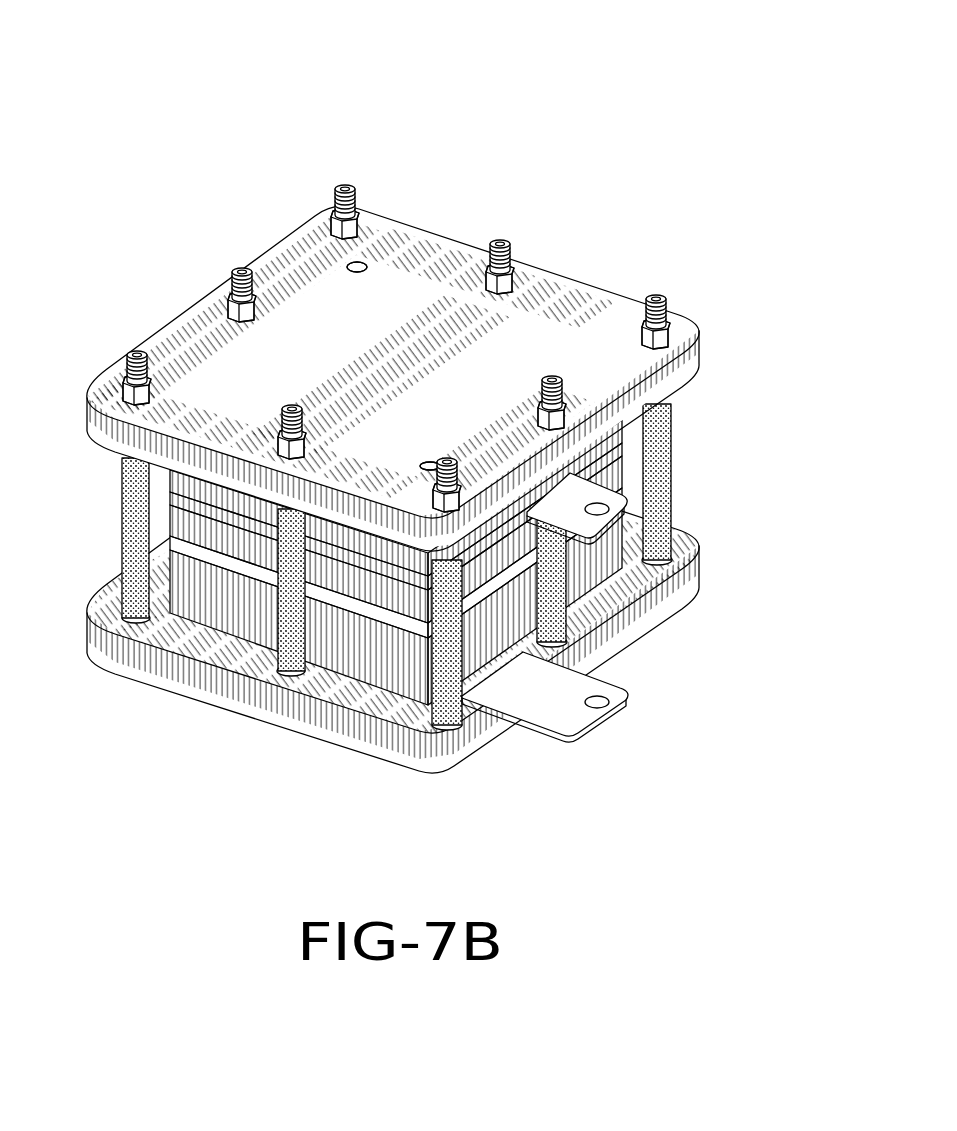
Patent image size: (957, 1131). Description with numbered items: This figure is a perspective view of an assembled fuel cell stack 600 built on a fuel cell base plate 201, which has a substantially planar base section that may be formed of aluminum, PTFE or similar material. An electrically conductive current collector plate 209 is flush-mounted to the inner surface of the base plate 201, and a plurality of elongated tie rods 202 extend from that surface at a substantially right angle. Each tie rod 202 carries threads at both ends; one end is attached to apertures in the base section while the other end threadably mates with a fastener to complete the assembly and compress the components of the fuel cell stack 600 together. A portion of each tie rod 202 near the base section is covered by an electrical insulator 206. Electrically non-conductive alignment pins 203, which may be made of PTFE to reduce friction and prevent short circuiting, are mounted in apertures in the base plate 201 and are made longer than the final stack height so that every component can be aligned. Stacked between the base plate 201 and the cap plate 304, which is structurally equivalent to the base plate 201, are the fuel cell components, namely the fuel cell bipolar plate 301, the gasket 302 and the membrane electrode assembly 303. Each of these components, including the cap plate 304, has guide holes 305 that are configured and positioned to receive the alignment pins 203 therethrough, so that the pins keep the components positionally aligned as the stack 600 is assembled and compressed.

The fuel cell stack 600 is at (104, 114).
The fuel cell base plate 201 is at (675, 595).
The tie rods 202 is at (338, 213).
The alignment pins 203 is at (355, 272).
The electrical insulator 206 is at (137, 567).
The current collector plate 209 is at (607, 510).
The fuel cell bipolar plate 301 is at (385, 650).
The gasket 302 is at (257, 572).
The membrane electrode assembly 303 is at (180, 518).
The cap plate 304 is at (575, 358).
The guide holes 305 is at (358, 262).